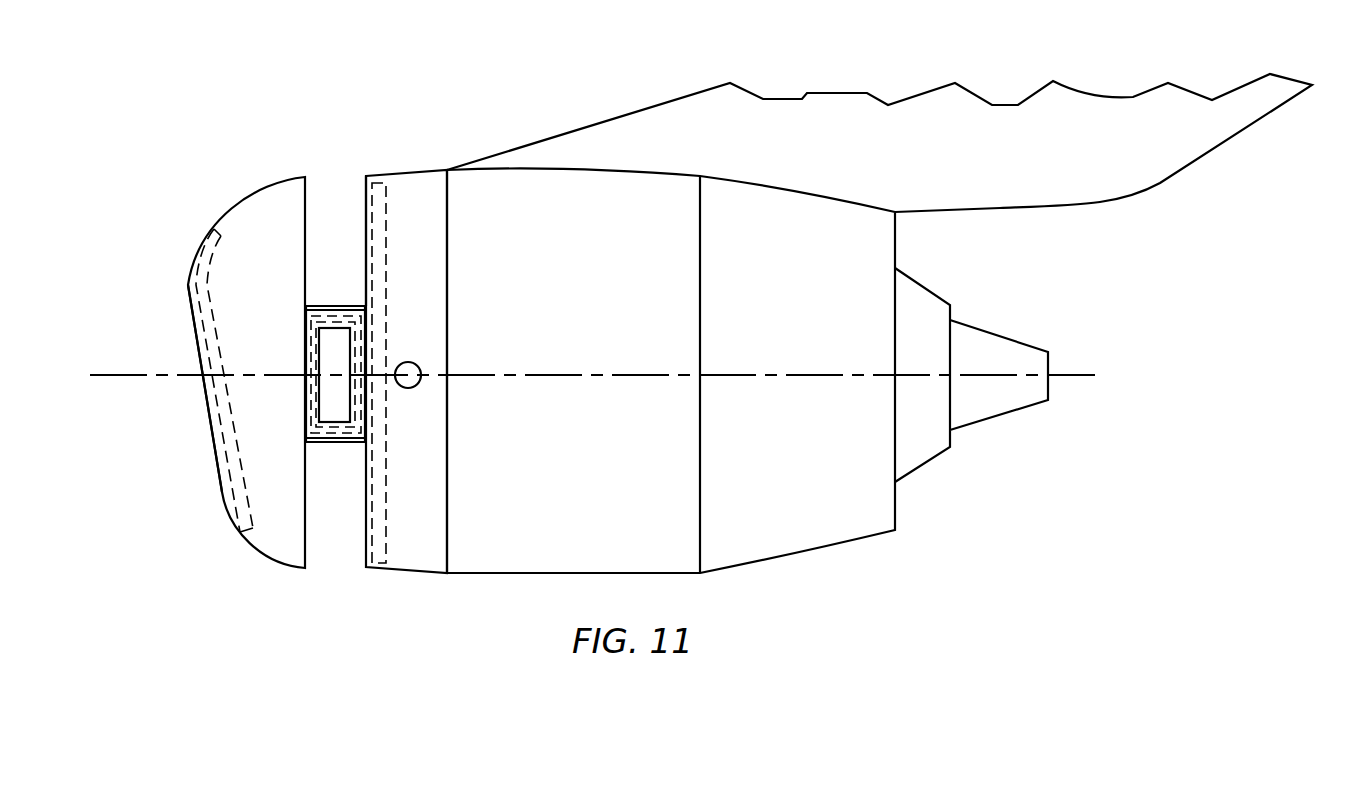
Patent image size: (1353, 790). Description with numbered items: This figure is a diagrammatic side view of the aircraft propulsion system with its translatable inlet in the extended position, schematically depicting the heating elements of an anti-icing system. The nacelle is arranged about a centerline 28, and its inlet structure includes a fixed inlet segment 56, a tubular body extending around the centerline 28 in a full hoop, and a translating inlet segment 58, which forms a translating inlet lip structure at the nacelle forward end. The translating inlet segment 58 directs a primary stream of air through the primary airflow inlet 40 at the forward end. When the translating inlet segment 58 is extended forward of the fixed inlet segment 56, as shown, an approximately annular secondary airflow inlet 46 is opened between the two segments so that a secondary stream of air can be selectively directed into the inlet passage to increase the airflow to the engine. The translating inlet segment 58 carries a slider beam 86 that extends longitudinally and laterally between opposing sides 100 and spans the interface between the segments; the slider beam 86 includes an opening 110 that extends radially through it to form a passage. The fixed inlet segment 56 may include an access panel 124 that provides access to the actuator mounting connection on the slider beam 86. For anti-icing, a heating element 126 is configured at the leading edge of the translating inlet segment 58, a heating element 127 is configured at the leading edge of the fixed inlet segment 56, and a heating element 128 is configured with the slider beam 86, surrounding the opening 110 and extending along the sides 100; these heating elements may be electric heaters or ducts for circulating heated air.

The centerline 28 is at (100, 376).
The primary airflow inlet 40 is at (186, 300).
The secondary airflow inlet 46 is at (343, 194).
The fixed inlet segment 56 is at (410, 586).
The translating inlet segment 58 is at (266, 576).
The slider beam 86 is at (341, 295).
The opposing sides 100 is at (352, 306).
The opening 110 is at (340, 352).
The access panel 124 is at (410, 389).
The heating element 126 is at (213, 229).
The heating element 127 is at (392, 190).
The heating element 128 is at (330, 444).